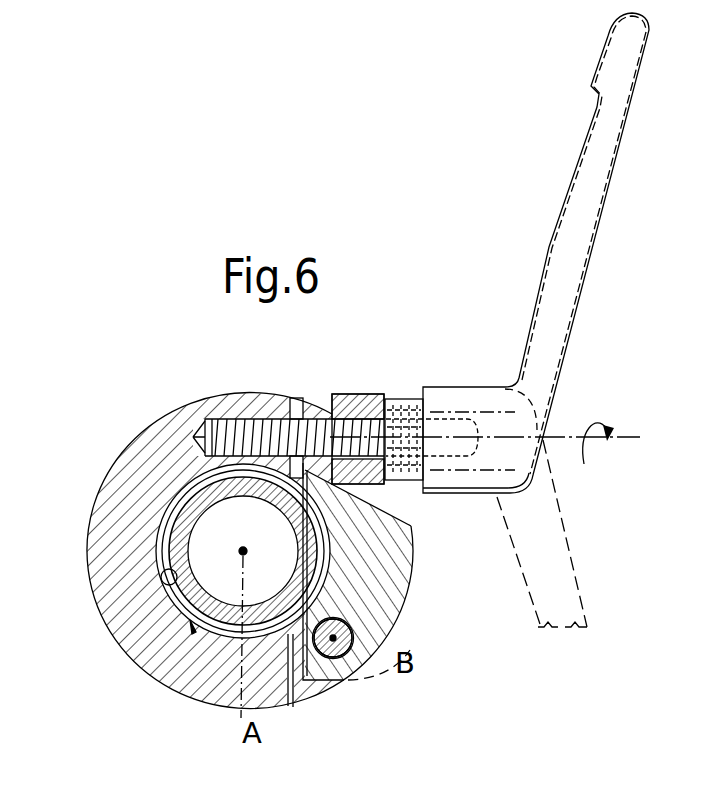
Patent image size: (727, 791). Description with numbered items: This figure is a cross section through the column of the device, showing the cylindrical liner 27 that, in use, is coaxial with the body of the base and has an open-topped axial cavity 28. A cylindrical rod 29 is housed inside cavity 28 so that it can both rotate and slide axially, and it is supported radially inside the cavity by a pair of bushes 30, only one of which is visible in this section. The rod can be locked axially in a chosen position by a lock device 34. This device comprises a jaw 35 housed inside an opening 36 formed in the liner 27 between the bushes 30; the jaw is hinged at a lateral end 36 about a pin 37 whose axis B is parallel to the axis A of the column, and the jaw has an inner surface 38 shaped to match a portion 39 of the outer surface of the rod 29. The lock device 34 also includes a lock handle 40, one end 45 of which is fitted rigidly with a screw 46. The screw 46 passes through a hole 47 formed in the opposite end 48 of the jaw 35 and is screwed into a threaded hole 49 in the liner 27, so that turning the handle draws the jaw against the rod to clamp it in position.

The cylindrical liner 27 is at (112, 524).
The axial cavity 28 is at (170, 594).
The cylindrical rod 29 is at (380, 572).
The bush 30 is at (194, 630).
The lock device 34 is at (383, 391).
The jaw 35 is at (410, 571).
The opening 36 is at (336, 672).
The pin 37 is at (323, 660).
The inner surface 38 is at (318, 544).
The portion of outer surface of rod 39 is at (322, 583).
The lock handle 40 is at (565, 290).
The end of lock handle 45 is at (437, 404).
The screw 46 is at (253, 418).
The hole 47 is at (396, 517).
The opposite end of jaw 48 is at (323, 398).
The threaded hole 49 is at (226, 419).